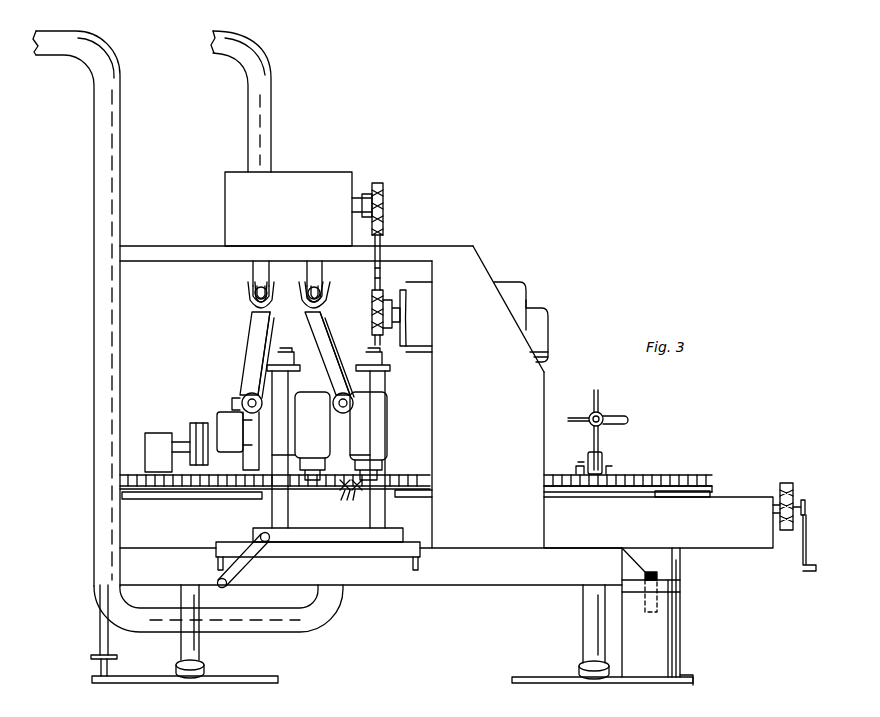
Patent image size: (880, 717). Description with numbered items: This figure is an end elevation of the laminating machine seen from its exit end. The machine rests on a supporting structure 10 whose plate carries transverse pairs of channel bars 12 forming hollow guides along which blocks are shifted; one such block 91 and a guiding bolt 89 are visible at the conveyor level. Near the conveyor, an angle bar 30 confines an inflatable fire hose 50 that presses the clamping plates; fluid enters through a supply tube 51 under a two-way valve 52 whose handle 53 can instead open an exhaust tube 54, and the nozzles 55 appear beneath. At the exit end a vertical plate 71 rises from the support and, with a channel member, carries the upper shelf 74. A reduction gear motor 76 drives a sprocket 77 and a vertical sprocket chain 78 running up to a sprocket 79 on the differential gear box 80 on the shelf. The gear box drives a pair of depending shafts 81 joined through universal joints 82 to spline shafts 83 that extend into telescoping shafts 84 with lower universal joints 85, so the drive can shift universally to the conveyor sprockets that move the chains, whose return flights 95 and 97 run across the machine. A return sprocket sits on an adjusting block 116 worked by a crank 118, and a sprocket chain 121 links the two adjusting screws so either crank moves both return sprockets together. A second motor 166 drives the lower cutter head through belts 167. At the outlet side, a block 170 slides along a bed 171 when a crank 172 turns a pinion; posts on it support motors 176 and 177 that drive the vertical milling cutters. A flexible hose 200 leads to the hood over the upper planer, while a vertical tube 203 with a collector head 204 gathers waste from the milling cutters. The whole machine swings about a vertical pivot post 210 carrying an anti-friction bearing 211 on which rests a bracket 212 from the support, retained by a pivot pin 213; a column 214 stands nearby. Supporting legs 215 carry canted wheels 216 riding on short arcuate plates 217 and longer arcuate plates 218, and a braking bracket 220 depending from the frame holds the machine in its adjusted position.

The supporting structure 10 is at (520, 585).
The channel bars 12 is at (728, 540).
The angle bar 30 is at (603, 460).
The fire hose 50 is at (606, 470).
The supply tube 51 is at (598, 396).
The two-way valve 52 is at (603, 424).
The handle 53 is at (628, 414).
The exhaust tube 54 is at (568, 428).
The nozzles 55 is at (346, 498).
The vertical plate 71 is at (546, 392).
The upper shelf 74 is at (413, 246).
The reduction gear motor 76 is at (518, 300).
The sprocket 77 is at (372, 312).
The sprocket chain 78 is at (380, 280).
The sprocket 79 is at (383, 183).
The differential gear box 80 is at (318, 172).
The shafts 81 is at (270, 277).
The universal joints 82 is at (272, 303).
The spline shafts 83 is at (252, 310).
The telescoping shafts 84 is at (267, 345).
The universal joints 85 is at (243, 400).
The bolt 89 is at (210, 499).
The block 91 is at (410, 494).
The return flight 95 is at (130, 475).
The return flight 97 is at (675, 474).
The adjusting block 116 is at (712, 492).
The crank 118 is at (803, 565).
The sprocket chain 121 is at (787, 483).
The second motor 166 is at (217, 418).
The belts 167 is at (190, 432).
The block 170 is at (302, 542).
The bed 171 is at (360, 555).
The crank 172 is at (240, 575).
The motor 176 is at (312, 436).
The motor 177 is at (387, 426).
The flexible hose 200 is at (272, 108).
The vertical tube 203 is at (120, 150).
The collector head 204 is at (270, 518).
The vertical pivot post 210 is at (678, 640).
The anti-friction bearing 211 is at (680, 590).
The bracket 212 is at (672, 580).
The pivot pin 213 is at (651, 572).
The column 214 is at (585, 628).
The supporting legs 215 is at (200, 648).
The canted wheel 216 is at (205, 663).
The arcuate plates 217 is at (515, 677).
The arcuate plates 218 is at (276, 676).
The bracket 220 is at (100, 636).